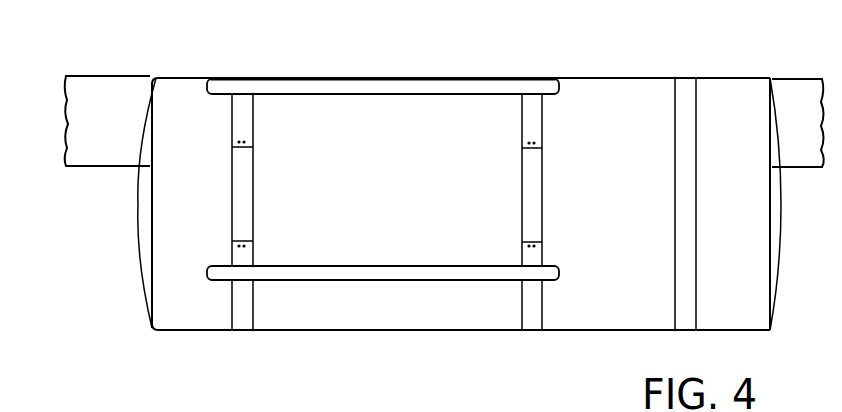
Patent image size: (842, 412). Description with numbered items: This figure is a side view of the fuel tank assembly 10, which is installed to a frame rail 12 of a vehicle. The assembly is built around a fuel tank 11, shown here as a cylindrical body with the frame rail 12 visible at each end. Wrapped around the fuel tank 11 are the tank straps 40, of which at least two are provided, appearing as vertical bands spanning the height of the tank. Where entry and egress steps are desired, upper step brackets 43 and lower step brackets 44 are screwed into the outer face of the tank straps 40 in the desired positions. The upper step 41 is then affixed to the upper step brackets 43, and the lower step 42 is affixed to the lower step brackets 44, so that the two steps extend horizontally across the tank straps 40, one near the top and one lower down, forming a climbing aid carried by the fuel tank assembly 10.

The fuel tank assembly 10 is at (476, 390).
The fuel tank 11 is at (177, 210).
The frame rail 12 is at (123, 95).
The tank strap 40 is at (243, 212).
The upper step 41 is at (325, 88).
The lower step 42 is at (400, 283).
The upper step bracket 43 is at (246, 118).
The lower step bracket 44 is at (241, 260).